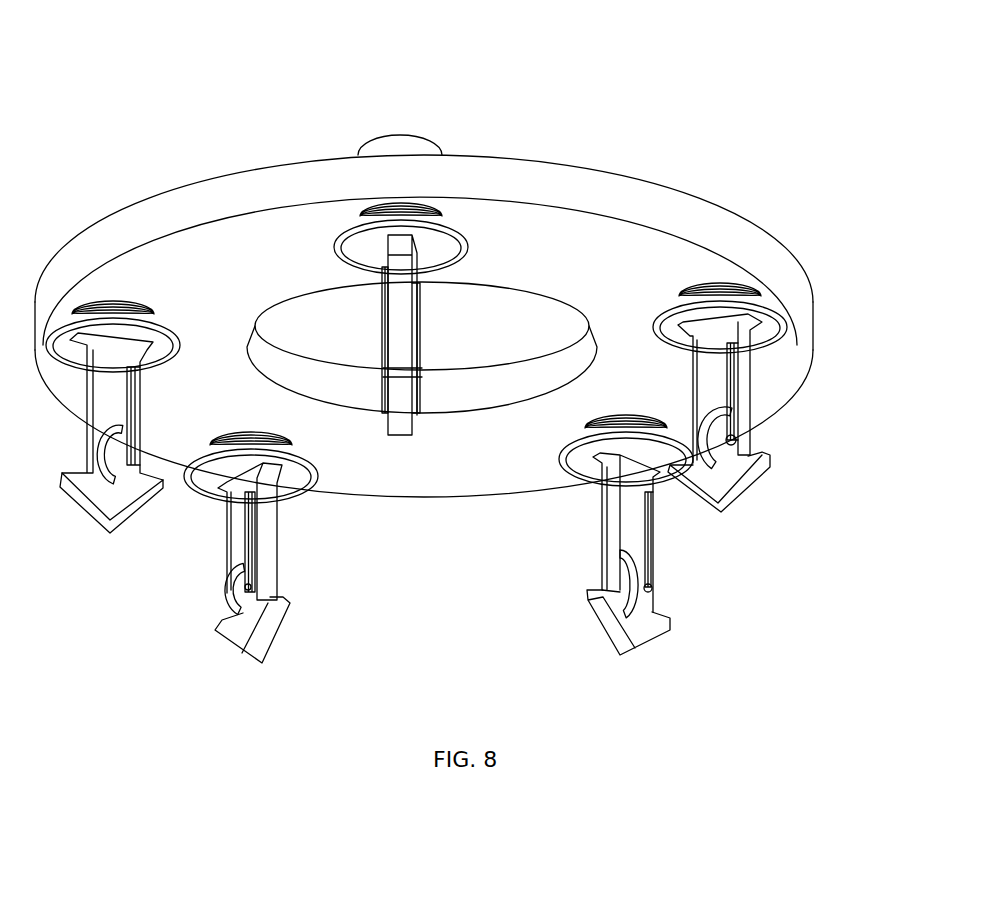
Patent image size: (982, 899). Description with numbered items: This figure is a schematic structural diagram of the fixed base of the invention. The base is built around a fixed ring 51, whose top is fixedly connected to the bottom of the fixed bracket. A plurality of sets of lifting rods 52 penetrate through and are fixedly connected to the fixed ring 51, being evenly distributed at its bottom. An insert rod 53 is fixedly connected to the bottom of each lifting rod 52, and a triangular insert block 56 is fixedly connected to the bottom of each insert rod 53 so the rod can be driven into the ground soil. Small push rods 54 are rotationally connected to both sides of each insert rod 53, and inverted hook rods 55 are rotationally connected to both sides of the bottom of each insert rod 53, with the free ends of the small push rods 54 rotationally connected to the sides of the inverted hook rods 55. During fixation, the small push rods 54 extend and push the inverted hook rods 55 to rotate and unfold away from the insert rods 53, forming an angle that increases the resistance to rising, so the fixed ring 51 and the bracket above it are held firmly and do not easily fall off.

The fixed ring 51 is at (548, 247).
The lifting rod 52 is at (727, 283).
The insert rod 53 is at (717, 338).
The small push rod 54 is at (705, 413).
The inverted hook rod 55 is at (735, 377).
The triangular insert block 56 is at (687, 480).